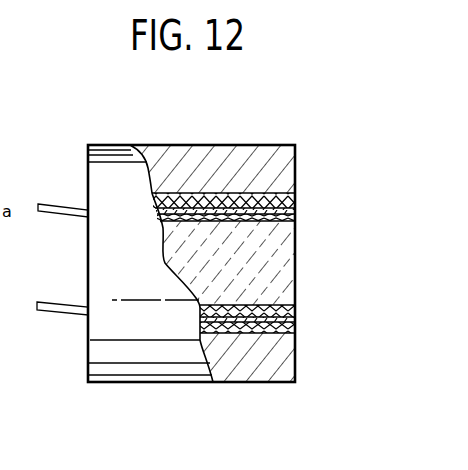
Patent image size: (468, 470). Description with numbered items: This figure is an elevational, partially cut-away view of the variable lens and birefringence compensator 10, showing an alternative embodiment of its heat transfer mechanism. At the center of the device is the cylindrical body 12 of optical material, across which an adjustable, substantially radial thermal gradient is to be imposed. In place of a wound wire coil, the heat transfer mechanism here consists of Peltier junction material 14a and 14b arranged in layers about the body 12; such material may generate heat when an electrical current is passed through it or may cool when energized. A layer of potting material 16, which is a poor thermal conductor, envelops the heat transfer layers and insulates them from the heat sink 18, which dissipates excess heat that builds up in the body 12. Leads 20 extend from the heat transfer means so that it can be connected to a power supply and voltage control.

The variable lens and birefringence compensator 10 is at (182, 142).
The cylindrical body 12 is at (284, 266).
The Peltier junction material 14a is at (296, 211).
The Peltier junction material 14b is at (297, 310).
The potting material 16 is at (297, 207).
The heat sink 18 is at (296, 152).
The leads 20 is at (63, 209).